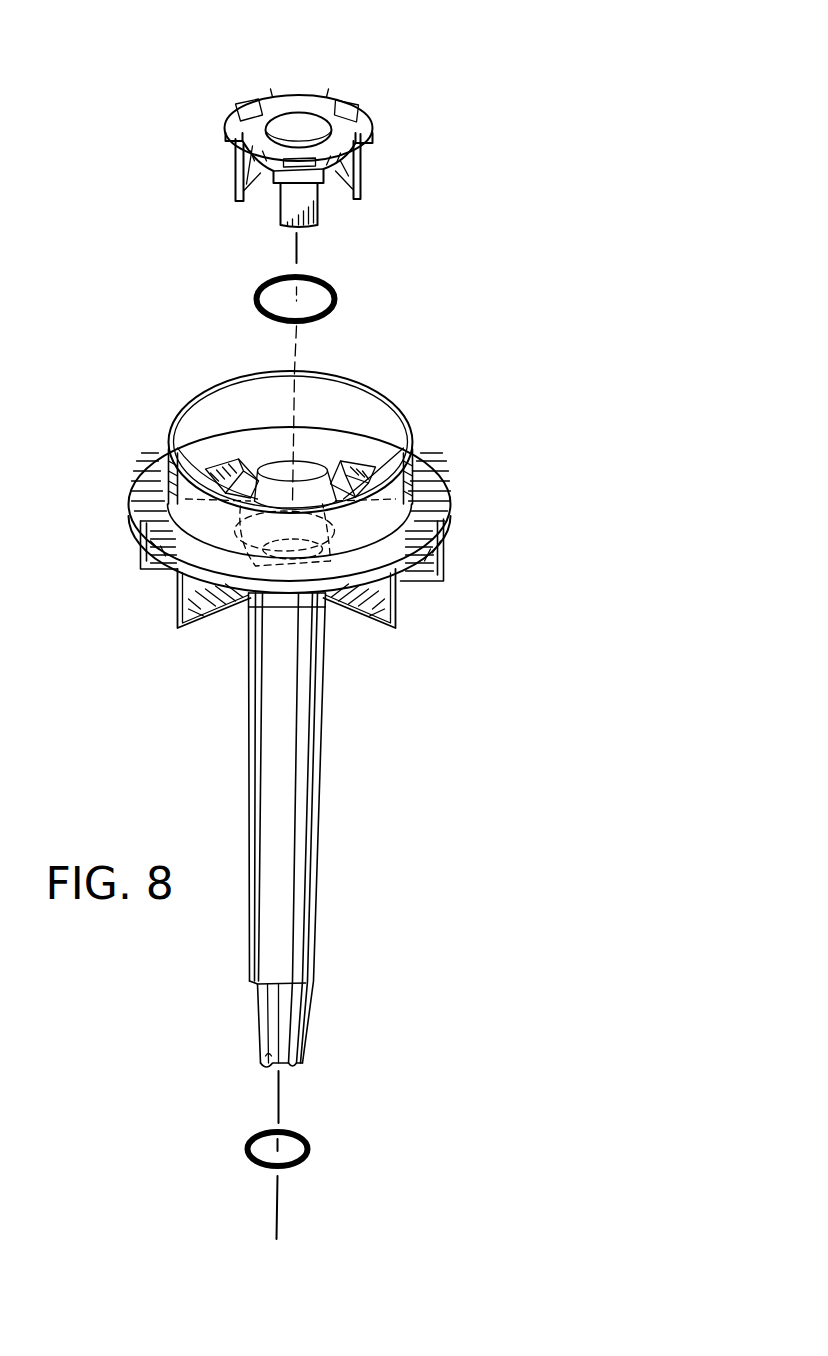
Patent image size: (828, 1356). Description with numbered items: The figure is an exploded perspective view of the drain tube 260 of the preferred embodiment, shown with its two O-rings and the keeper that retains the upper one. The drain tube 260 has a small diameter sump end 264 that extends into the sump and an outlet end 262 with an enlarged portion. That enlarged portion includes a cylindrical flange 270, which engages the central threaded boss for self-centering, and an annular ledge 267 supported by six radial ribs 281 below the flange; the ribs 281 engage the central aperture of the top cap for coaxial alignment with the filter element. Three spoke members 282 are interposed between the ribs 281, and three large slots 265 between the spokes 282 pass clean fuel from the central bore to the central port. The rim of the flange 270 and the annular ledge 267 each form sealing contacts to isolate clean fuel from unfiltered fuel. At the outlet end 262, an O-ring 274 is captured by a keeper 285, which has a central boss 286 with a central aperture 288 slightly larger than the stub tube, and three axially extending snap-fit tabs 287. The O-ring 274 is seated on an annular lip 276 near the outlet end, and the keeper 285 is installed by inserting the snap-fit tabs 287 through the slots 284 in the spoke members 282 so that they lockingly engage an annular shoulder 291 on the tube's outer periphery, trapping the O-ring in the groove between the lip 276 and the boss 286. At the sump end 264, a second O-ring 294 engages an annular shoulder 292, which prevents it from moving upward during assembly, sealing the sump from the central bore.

The drain tube 260 is at (317, 827).
The outlet end 262 is at (413, 581).
The sump end 264 is at (306, 1027).
The slots 265 is at (285, 473).
The annular ledge 267 is at (436, 490).
The cylindrical flange 270 is at (340, 404).
The O-ring 274 is at (330, 283).
The annular lip 276 is at (143, 567).
The radial ribs 281 is at (363, 628).
The spoke members 282 is at (330, 480).
The slots 284 is at (257, 497).
The keeper 285 is at (312, 98).
The central boss 286 is at (320, 125).
The snap-fit tabs 287 is at (362, 176).
The central aperture 288 is at (292, 140).
The annular shoulder 291 is at (283, 602).
The annular shoulder 292 is at (300, 980).
The O-ring 294 is at (310, 1150).